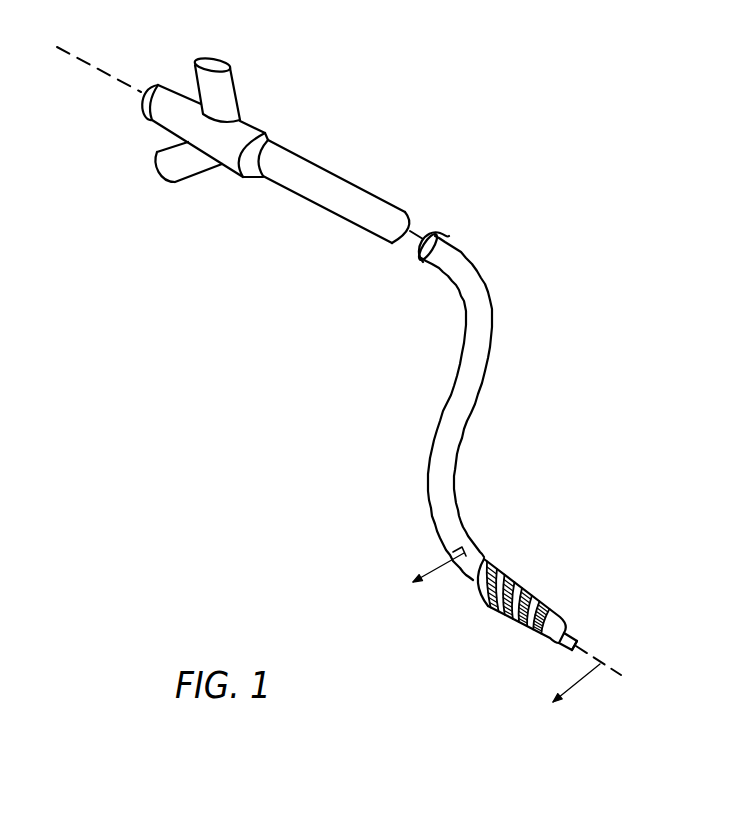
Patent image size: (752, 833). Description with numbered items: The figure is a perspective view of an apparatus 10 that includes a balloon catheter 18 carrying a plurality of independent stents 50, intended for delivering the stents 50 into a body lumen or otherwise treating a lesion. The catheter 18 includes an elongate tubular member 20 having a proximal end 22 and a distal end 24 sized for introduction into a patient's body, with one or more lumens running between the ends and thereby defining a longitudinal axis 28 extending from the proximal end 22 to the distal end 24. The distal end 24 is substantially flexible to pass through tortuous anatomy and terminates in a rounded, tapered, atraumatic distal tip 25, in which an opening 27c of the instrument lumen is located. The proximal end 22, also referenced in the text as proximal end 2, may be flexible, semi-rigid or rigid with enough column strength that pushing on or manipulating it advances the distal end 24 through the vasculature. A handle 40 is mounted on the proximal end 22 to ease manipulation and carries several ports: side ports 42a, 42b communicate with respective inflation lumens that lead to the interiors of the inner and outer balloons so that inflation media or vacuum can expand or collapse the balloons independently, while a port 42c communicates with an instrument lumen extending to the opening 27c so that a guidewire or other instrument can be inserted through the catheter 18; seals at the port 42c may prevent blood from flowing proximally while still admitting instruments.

The apparatus 10 is at (542, 210).
The balloon catheter 18 is at (515, 325).
The elongate tubular member 20 is at (450, 398).
The proximal end 22 is at (261, 179).
The distal end 24 is at (478, 567).
The distal tip 25 is at (577, 636).
The opening 27c is at (578, 645).
The longitudinal axis 28 is at (108, 84).
The handle 40 is at (267, 122).
The side port 42a is at (234, 78).
The side port 42b is at (183, 185).
The port 42c is at (150, 117).
The stents 50 is at (563, 602).
The proximal end 2 is at (496, 636).